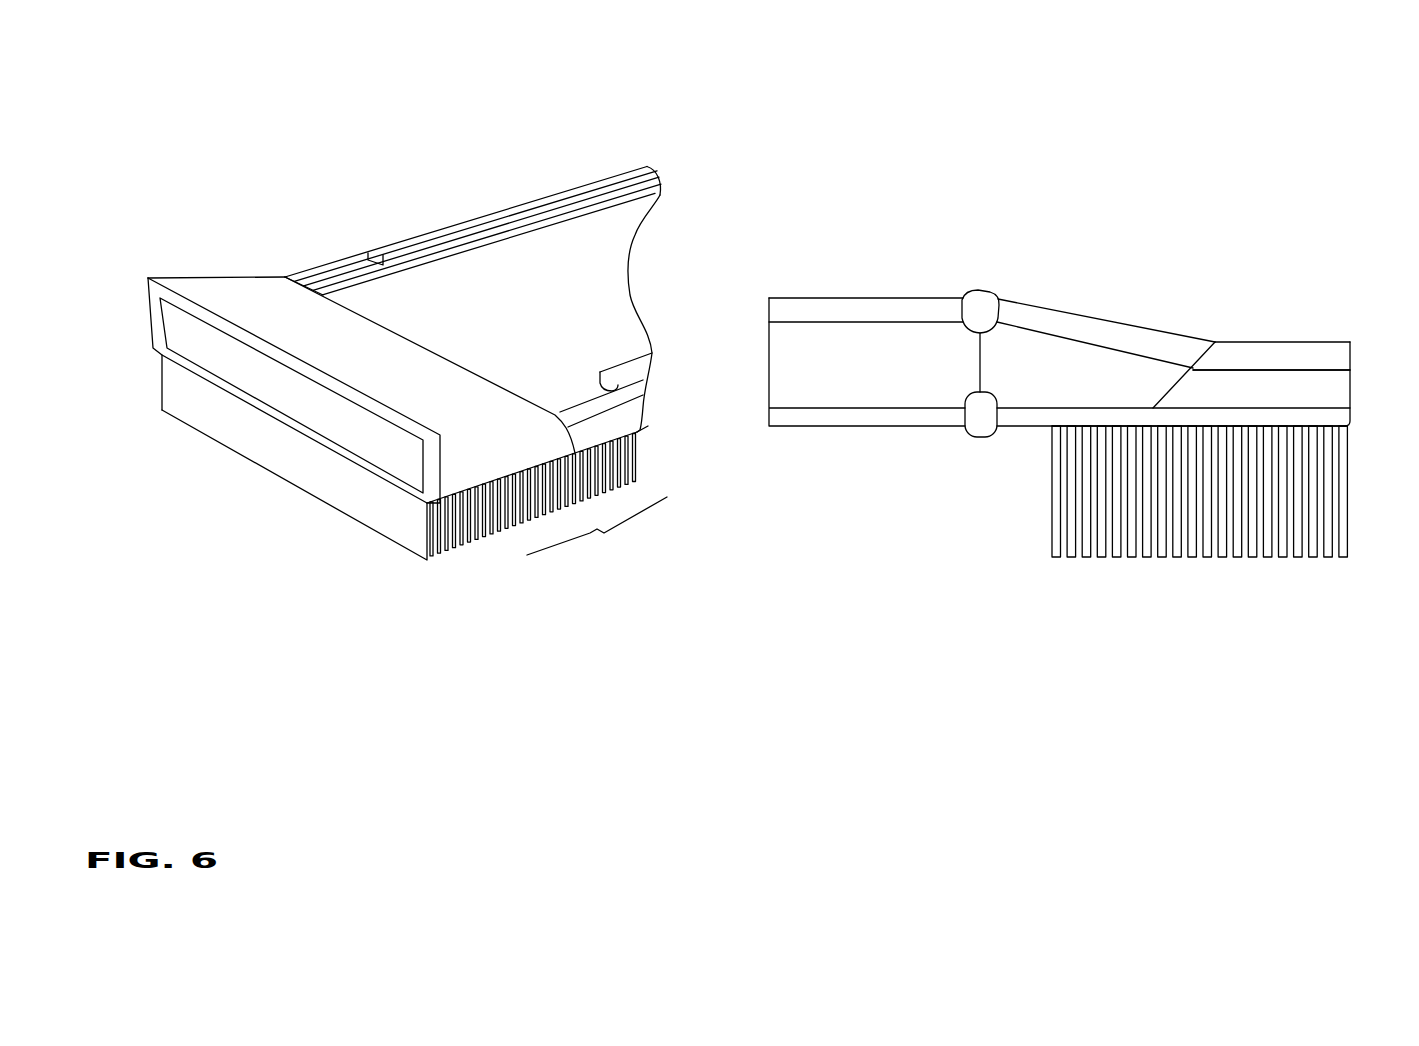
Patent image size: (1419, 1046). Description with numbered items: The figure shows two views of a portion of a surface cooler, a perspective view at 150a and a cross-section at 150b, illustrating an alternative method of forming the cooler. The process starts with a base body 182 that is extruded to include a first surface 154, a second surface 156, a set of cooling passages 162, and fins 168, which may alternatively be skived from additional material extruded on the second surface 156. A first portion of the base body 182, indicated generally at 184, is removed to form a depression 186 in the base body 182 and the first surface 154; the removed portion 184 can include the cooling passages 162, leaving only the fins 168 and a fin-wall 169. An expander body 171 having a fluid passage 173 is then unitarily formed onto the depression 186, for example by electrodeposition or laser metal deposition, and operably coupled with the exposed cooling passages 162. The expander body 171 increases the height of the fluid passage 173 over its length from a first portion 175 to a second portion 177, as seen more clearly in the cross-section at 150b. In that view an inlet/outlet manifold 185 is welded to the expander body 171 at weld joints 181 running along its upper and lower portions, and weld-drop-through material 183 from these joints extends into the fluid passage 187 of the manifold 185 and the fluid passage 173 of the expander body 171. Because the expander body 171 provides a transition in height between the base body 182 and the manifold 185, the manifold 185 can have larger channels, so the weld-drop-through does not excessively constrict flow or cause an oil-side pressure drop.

The surface cooler 150a is at (430, 168).
The surface cooler 150b is at (999, 259).
The first surface 154 is at (487, 277).
The second surface 156 is at (633, 480).
The set of cooling passages 162 is at (1334, 381).
The fins 168 is at (484, 533).
The fin-wall 169 is at (650, 416).
The expander body 171 is at (233, 270).
The fluid passage 173 is at (227, 352).
The first portion 175 is at (285, 277).
The second portion 177 is at (147, 278).
The weld joints 181 is at (975, 305).
The base body 182 is at (573, 230).
The weld-drop-through material 183 is at (962, 338).
The removed portion 184 is at (597, 528).
The inlet/outlet manifold 185 is at (837, 286).
The depression 186 is at (375, 463).
The fluid passage 187 is at (790, 357).